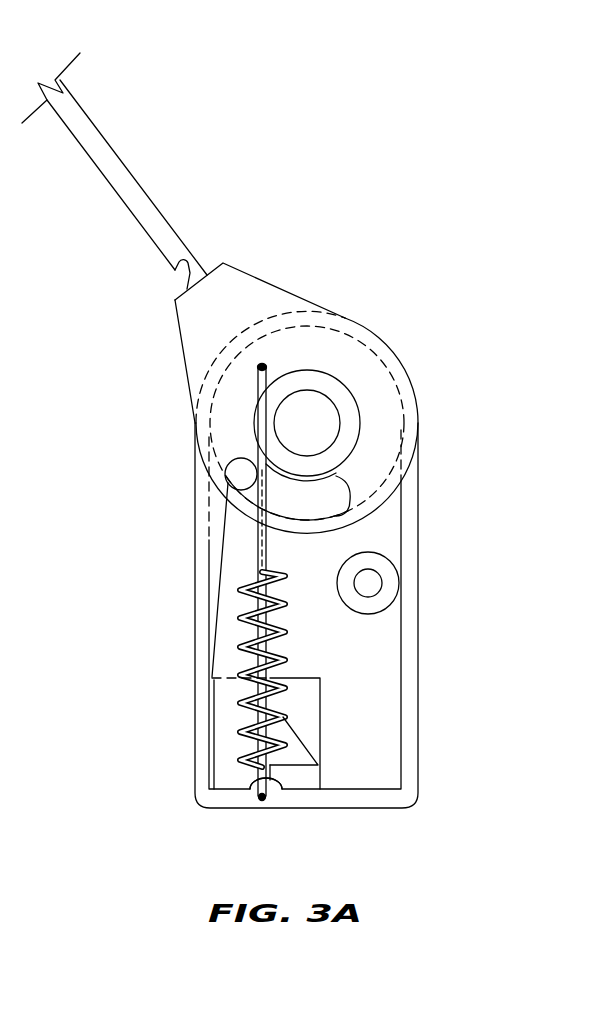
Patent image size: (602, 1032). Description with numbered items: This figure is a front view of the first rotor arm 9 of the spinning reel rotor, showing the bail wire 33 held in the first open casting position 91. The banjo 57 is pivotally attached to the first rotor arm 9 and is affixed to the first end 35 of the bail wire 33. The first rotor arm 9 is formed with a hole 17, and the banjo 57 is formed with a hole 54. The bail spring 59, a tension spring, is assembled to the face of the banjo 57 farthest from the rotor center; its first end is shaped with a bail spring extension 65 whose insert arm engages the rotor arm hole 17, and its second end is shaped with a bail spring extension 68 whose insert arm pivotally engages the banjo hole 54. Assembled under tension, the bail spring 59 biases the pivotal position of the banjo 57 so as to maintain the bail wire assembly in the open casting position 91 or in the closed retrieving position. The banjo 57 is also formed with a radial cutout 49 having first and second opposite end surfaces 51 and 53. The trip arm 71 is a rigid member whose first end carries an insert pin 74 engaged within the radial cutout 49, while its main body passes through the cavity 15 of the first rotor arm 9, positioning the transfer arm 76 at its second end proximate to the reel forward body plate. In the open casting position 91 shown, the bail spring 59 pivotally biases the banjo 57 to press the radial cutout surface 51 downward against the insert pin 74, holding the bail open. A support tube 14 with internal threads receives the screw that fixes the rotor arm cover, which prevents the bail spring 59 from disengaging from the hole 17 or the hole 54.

The first rotor arm 9 is at (480, 186).
The support tube 14 is at (387, 578).
The cavity 15 is at (377, 682).
The hole 17 is at (262, 798).
The bail wire 33 is at (130, 193).
The first end 35 is at (177, 268).
The radial cutout 49 is at (337, 493).
The first end surface 51 is at (230, 480).
The second end surface 53 is at (350, 495).
The hole 54 is at (261, 365).
The banjo 57 is at (238, 293).
The bail spring 59 is at (250, 700).
The bail spring extension 65 is at (262, 783).
The bail spring extension 68 is at (267, 387).
The trip arm 71 is at (240, 576).
The insert pin 74 is at (235, 480).
The transfer arm 76 is at (298, 778).
The open casting position 91 is at (77, 122).